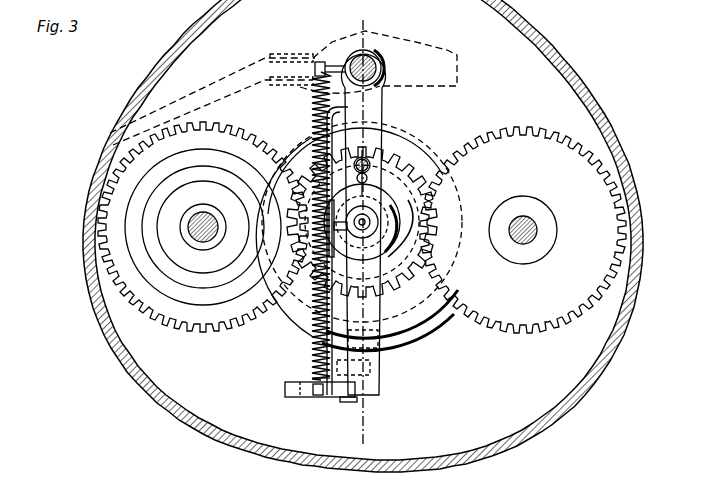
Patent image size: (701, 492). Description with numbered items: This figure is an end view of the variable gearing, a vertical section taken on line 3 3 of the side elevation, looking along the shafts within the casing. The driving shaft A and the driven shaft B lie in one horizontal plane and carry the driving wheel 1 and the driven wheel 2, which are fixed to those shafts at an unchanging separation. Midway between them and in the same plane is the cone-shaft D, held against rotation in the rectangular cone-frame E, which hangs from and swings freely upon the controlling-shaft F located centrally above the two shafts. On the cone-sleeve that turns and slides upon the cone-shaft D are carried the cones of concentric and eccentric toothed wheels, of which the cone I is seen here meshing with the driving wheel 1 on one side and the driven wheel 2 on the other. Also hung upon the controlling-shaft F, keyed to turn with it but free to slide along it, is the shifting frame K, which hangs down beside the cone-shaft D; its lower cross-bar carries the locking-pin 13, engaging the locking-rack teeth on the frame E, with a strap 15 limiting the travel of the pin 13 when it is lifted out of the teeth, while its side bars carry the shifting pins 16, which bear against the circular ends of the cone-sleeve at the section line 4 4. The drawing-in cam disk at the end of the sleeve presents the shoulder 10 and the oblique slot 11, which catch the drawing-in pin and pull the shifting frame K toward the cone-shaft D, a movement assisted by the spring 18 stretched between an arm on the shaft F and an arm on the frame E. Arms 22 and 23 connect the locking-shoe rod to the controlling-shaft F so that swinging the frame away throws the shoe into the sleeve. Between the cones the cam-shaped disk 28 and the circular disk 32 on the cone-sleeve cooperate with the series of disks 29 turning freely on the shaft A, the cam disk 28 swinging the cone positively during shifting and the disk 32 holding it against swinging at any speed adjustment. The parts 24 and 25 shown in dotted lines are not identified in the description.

The driving wheel 1 is at (232, 127).
The driven wheel 2 is at (530, 119).
The section line 3 3 is at (384, 216).
The section line 4 4 is at (368, 227).
The shoulder 10 is at (400, 252).
The slot 11 is at (415, 212).
The locking-pin 13 is at (350, 400).
The strap 15 is at (291, 398).
The shifting pins 16 is at (339, 235).
The spring 18 is at (312, 358).
The arm 22 is at (365, 194).
The arm 23 is at (372, 114).
The arm (phantom) 24 is at (447, 53).
The band (phantom) 25 is at (188, 104).
The cam-shaped disk 28 is at (288, 312).
The series of disks 29 is at (215, 152).
The circular disk 32 is at (407, 310).
The driving shaft A is at (205, 241).
The driven shaft B is at (523, 244).
The cone-shaft D is at (362, 248).
The cone-frame E is at (370, 360).
The controlling-shaft F is at (381, 68).
The cone I is at (432, 299).
The shifting frame K is at (347, 96).